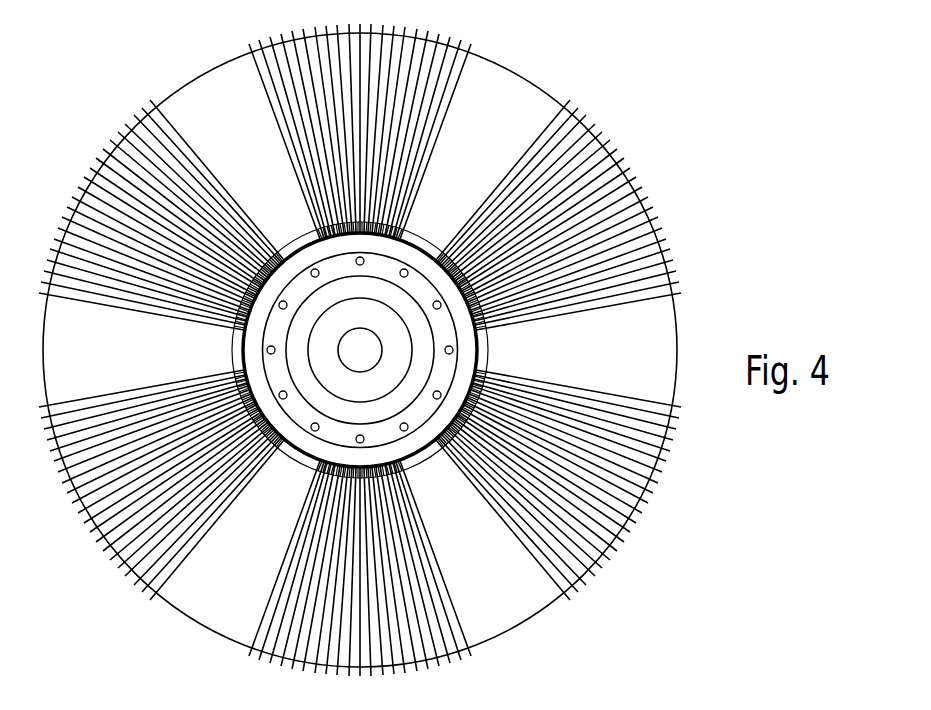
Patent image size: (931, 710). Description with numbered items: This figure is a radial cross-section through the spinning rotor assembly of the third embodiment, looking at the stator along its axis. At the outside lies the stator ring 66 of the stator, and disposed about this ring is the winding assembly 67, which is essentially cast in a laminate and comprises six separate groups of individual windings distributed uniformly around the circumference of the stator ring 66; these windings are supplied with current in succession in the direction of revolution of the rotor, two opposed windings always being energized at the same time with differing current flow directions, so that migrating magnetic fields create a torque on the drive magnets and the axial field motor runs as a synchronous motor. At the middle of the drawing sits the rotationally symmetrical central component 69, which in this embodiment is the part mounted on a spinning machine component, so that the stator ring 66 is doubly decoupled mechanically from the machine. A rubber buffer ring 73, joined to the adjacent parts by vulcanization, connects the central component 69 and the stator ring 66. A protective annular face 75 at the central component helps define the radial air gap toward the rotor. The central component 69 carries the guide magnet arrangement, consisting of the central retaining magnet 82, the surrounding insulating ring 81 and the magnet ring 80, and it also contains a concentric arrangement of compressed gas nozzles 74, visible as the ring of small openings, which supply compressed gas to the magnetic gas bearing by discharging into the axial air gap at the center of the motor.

The stator ring 66 is at (530, 108).
The winding assembly 67 is at (610, 147).
The rotationally symmetrical central component 69 is at (289, 227).
The rubber buffer ring 73 is at (467, 368).
The compressed gas nozzles 74 is at (408, 270).
The protective annular face 75 is at (493, 344).
The magnet ring 80 is at (434, 377).
The insulating ring 81 is at (407, 360).
The central retaining magnet 82 is at (367, 360).